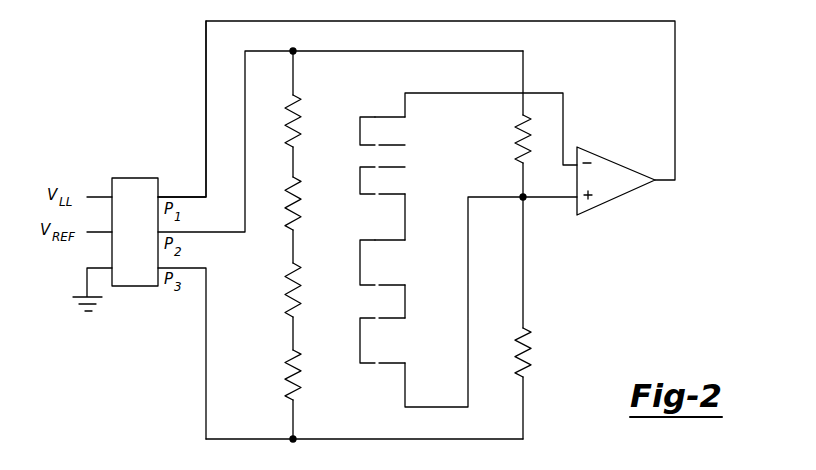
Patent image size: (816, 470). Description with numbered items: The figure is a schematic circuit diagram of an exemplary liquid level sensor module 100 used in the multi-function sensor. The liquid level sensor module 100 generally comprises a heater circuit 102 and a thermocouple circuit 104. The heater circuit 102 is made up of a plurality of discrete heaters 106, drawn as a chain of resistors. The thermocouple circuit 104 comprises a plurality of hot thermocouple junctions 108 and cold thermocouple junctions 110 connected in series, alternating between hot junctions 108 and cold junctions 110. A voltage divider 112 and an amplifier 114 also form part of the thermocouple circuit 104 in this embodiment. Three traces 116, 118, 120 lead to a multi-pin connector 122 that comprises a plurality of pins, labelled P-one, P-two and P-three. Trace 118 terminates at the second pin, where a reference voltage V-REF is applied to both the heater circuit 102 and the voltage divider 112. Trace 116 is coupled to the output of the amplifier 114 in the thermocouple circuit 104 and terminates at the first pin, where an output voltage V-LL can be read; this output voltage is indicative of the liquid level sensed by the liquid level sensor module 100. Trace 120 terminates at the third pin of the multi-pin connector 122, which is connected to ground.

The liquid level sensor module 100 is at (687, 243).
The heater circuit 102 is at (318, 113).
The thermocouple circuit 104 is at (445, 200).
The discrete heater 106 is at (288, 124).
The hot thermocouple junction 108 is at (378, 117).
The cold thermocouple junction 110 is at (378, 145).
The voltage divider 112 is at (545, 252).
The amplifier 114 is at (621, 164).
The trace 116 is at (206, 47).
The trace 118 is at (245, 118).
The trace 120 is at (206, 393).
The multi-pin connector 122 is at (125, 178).